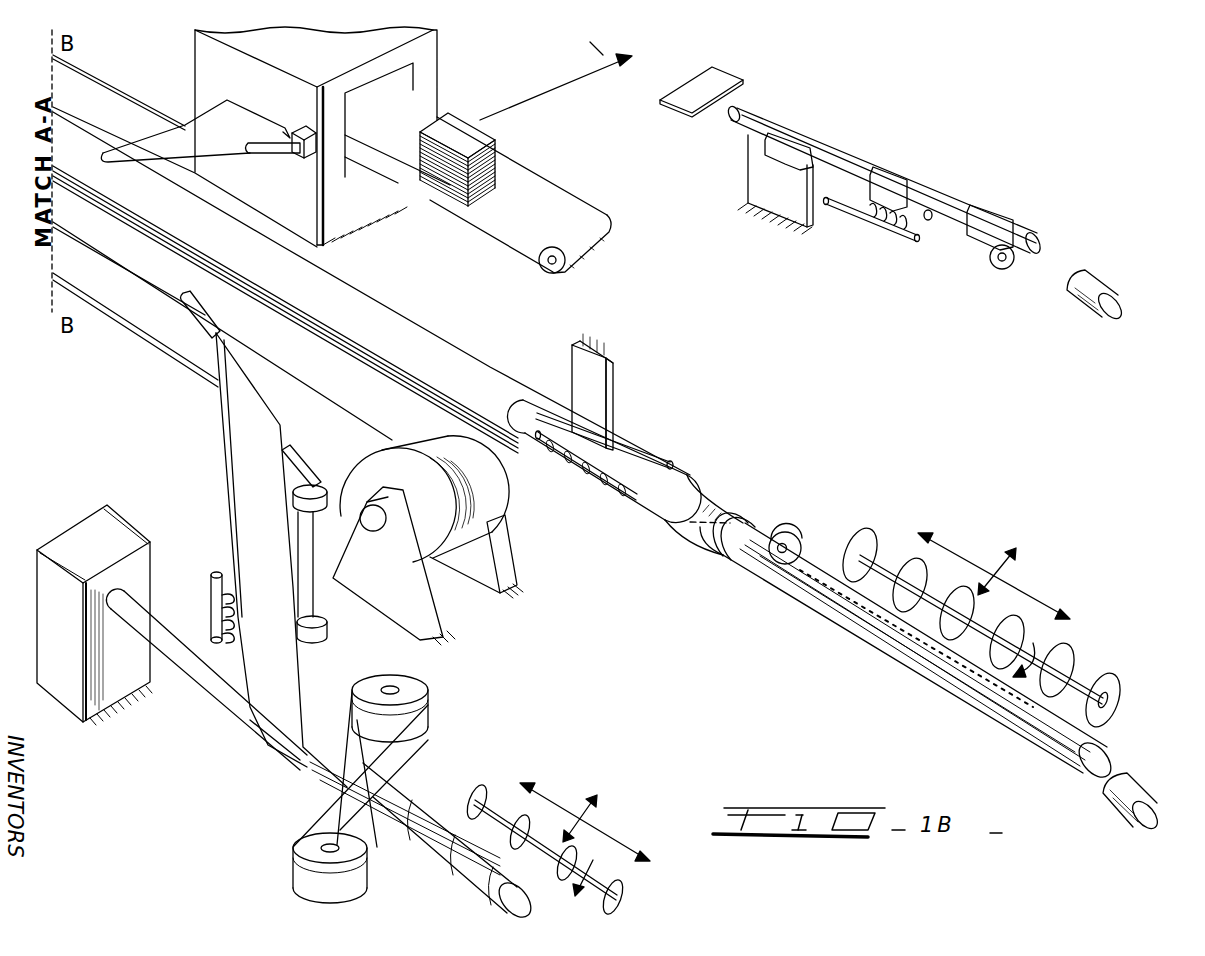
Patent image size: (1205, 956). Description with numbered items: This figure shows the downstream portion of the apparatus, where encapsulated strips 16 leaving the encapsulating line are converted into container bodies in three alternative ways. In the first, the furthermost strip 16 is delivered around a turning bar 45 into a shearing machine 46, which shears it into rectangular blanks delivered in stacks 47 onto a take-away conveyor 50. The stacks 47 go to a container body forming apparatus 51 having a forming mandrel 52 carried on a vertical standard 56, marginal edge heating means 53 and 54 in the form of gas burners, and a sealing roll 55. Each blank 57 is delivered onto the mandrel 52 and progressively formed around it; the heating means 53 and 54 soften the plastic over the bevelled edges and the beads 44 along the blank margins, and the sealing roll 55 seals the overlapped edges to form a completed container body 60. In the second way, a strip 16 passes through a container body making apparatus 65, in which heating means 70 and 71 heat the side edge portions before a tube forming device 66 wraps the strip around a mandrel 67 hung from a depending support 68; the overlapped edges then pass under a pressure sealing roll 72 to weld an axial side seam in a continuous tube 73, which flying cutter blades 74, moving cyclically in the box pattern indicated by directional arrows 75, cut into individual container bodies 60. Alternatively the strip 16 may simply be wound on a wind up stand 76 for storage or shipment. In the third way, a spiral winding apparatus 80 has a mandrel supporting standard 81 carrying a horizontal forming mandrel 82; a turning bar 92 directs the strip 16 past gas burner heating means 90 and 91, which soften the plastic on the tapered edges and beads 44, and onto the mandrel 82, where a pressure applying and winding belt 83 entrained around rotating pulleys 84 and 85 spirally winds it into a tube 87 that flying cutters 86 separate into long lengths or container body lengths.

The encapsulated strip 16 is at (500, 387).
The bead 44 is at (720, 68).
The turning bar 45 is at (267, 158).
The shearing machine 46 is at (366, 192).
The stack of blanks 47 is at (505, 142).
The take-away conveyor 50 is at (530, 222).
The container body forming apparatus 51 is at (887, 260).
The forming mandrel 52 is at (838, 147).
The marginal edge heating means 53 is at (852, 213).
The marginal edge heating means 54 is at (928, 220).
The sealing roll 55 is at (1002, 270).
The vertical standard 56 is at (773, 203).
The blank 57 is at (717, 82).
The container body 60 is at (1112, 278).
The container body making apparatus 65 is at (841, 662).
The tube forming device 66 is at (690, 537).
The mandrel 67 is at (663, 493).
The depending support 68 is at (597, 380).
The heating means 70 is at (580, 467).
The heating means 71 is at (643, 443).
The pressure sealing roll 72 is at (790, 532).
The continuous tube 73 is at (968, 700).
The flying cutter blades 74 is at (860, 533).
The directional arrows 75 is at (1008, 575).
The wind up stand 76 is at (478, 606).
The spirally wound container apparatus 80 is at (283, 769).
The mandrel supporting standard 81 is at (133, 530).
The forming mandrel 82 is at (177, 652).
The pressure applying and winding belt 83 is at (410, 737).
The pulley 84 is at (370, 687).
The pulley 85 is at (307, 848).
The flying cutters 86 is at (487, 793).
The tube 87 is at (430, 840).
The heating means 90 is at (211, 587).
The heating means 91 is at (303, 677).
The turning bar 92 is at (197, 327).